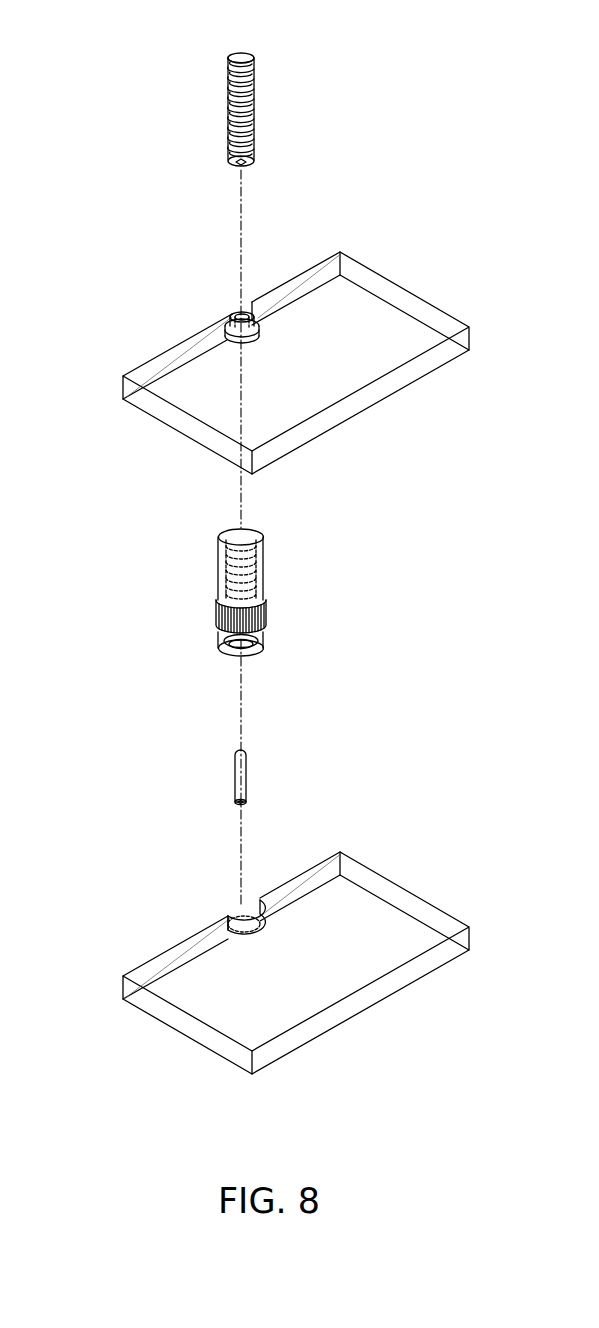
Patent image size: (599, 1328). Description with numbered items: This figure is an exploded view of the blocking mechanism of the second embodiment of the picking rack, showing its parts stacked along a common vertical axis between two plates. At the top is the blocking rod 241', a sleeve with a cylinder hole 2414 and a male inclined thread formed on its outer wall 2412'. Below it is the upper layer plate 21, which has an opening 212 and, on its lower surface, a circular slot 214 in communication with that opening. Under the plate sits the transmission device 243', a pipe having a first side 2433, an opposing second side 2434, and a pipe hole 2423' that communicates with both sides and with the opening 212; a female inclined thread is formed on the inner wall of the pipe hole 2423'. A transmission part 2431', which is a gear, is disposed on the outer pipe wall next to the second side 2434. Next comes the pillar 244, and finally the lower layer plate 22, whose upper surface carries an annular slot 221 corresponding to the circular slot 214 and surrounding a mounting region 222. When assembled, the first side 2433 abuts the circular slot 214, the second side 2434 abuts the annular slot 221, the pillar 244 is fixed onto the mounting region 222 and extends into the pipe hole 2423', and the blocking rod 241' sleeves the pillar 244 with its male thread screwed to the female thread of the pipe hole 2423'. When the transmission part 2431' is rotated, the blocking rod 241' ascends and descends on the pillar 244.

The blocking rod 241' is at (207, 133).
The outer wall 2412' is at (280, 97).
The cylinder hole 2414 is at (244, 167).
The upper layer plate 21 is at (168, 414).
The opening 212 is at (237, 308).
The circular slot 214 is at (233, 339).
The transmission device 243' is at (211, 622).
The first side 2433 is at (236, 528).
The transmission part 2431' is at (272, 592).
The second side 2434 is at (224, 652).
The pipe hole 2423' is at (265, 682).
The pillar 244 is at (247, 775).
The lower layer plate 22 is at (188, 1020).
The mounting region 222 is at (234, 904).
The annular slot 221 is at (222, 914).